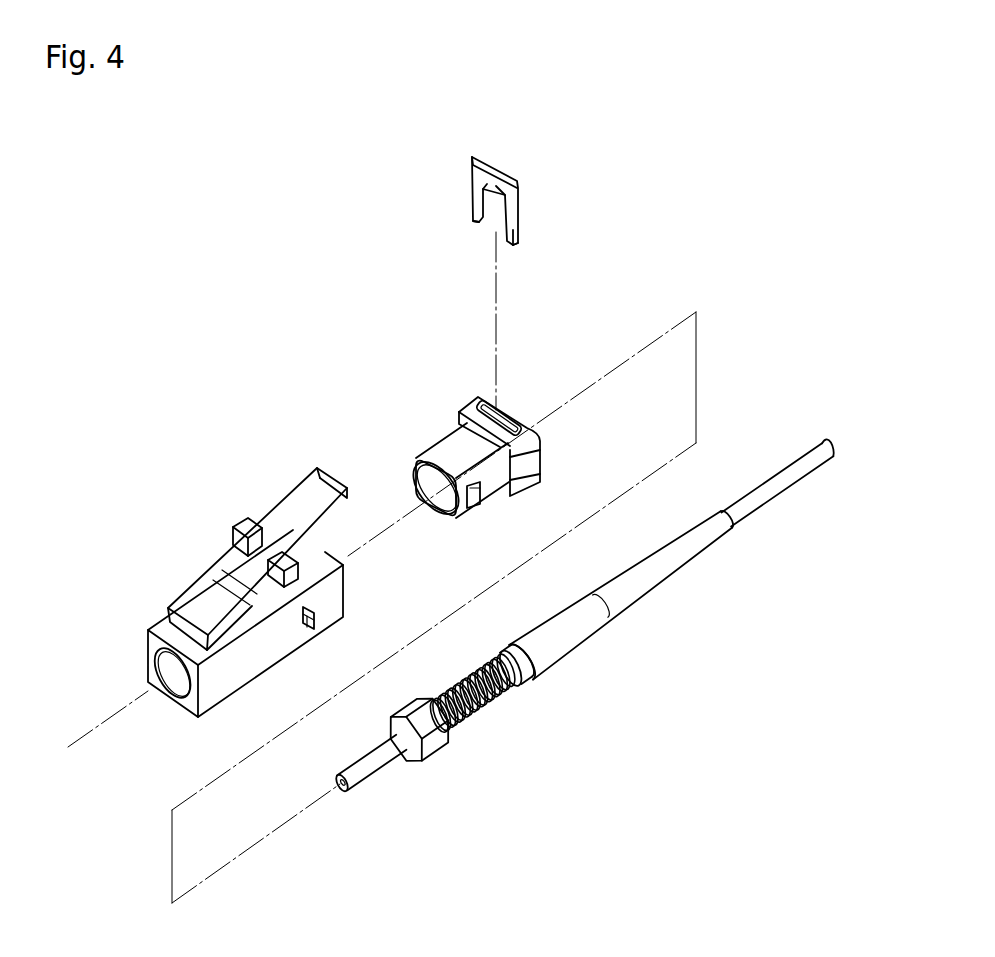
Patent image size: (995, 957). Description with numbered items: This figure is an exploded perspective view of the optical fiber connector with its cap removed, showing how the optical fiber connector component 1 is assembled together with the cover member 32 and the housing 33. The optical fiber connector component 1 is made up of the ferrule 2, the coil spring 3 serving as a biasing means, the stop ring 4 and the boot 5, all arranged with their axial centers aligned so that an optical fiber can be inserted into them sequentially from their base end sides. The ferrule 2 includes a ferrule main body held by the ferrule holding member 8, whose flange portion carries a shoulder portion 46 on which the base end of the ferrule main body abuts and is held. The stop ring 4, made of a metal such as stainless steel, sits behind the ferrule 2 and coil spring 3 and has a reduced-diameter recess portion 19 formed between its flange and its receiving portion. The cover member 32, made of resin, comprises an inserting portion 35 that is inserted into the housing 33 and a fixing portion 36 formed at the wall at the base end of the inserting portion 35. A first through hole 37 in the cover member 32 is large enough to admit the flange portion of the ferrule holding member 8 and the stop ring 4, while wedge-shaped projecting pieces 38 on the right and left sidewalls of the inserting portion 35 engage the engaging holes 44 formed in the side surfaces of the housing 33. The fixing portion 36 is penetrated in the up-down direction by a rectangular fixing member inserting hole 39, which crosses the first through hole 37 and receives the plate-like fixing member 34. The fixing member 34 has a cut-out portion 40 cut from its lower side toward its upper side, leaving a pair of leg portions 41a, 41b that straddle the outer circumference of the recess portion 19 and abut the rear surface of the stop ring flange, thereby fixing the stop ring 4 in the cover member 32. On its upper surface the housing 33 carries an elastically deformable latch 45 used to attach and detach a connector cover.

The optical fiber connector component 1 is at (596, 632).
The ferrule 2 is at (380, 769).
The coil spring 3 is at (481, 716).
The stop ring 4 is at (527, 688).
The boot 5 is at (700, 596).
The ferrule holding member 8 is at (441, 748).
The recess portion 19 is at (517, 649).
The cover member 32 is at (433, 447).
The housing 33 is at (256, 633).
The fixing member 34 is at (513, 173).
The inserting portion 35 is at (433, 455).
The fixing portion 36 is at (467, 403).
The first through hole 37 is at (427, 481).
The projecting pieces 38 is at (474, 499).
The fixing member inserting hole 39 is at (498, 419).
The cut-out portion 40 is at (498, 200).
The leg portion 41a is at (473, 211).
The leg portion 41b is at (518, 244).
The engaging holes 44 is at (311, 629).
The latch 45 is at (233, 574).
The shoulder portion 46 is at (313, 553).